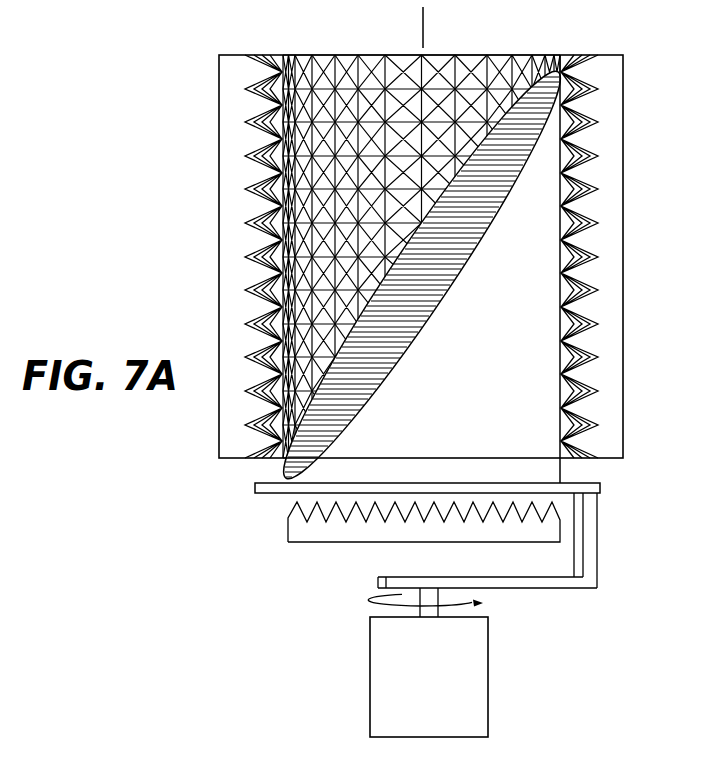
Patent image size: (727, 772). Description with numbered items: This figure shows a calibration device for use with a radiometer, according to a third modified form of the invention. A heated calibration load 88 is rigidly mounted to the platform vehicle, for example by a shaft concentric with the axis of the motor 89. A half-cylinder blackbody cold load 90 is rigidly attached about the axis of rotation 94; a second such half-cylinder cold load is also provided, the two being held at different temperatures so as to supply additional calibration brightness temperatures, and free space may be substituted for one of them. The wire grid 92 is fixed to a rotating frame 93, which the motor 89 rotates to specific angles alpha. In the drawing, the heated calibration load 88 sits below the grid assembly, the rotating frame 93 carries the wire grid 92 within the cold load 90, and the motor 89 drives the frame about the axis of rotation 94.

The heated calibration load 88 is at (333, 540).
The motor 89 is at (472, 692).
The half-cylinder blackbody cold load 90 is at (617, 192).
The wire grid 92 is at (460, 270).
The rotating frame 93 is at (600, 486).
The axis of rotation 94 is at (423, 26).